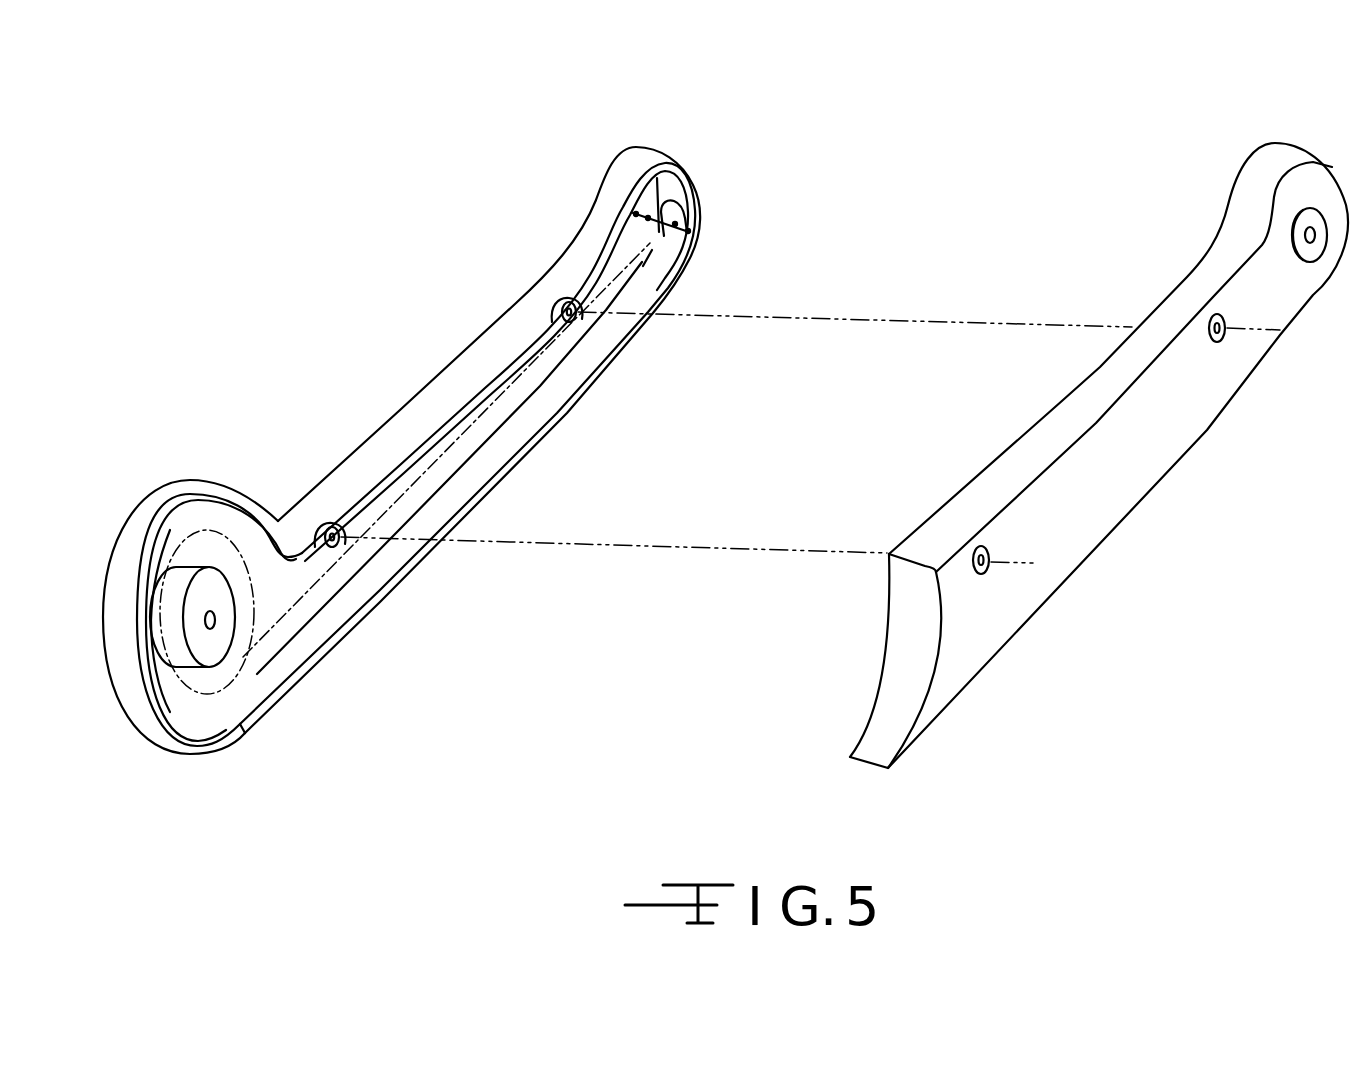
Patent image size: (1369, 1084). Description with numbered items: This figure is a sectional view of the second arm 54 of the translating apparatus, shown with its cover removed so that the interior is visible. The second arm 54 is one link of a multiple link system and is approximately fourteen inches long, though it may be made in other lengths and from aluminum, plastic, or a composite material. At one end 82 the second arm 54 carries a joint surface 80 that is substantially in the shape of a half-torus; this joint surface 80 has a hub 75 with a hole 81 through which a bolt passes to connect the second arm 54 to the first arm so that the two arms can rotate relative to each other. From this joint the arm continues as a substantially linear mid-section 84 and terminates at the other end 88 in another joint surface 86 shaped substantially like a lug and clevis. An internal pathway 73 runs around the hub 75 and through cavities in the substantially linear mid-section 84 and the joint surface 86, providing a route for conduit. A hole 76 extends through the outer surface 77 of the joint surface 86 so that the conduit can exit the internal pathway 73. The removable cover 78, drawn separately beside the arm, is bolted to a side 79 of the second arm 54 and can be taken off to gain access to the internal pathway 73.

The second arm 54 is at (387, 422).
The internal pathway 73 is at (312, 596).
The hub 75 is at (185, 648).
The hole 76 is at (684, 220).
The outer surface 77 is at (698, 172).
The removable cover 78 is at (1073, 580).
The side 79 is at (507, 474).
The joint surface 80 is at (153, 496).
The hole 81 is at (210, 611).
The end 82 is at (107, 590).
The substantially linear mid-section 84 is at (482, 391).
The joint surface 86 is at (606, 170).
The other end 88 is at (635, 147).